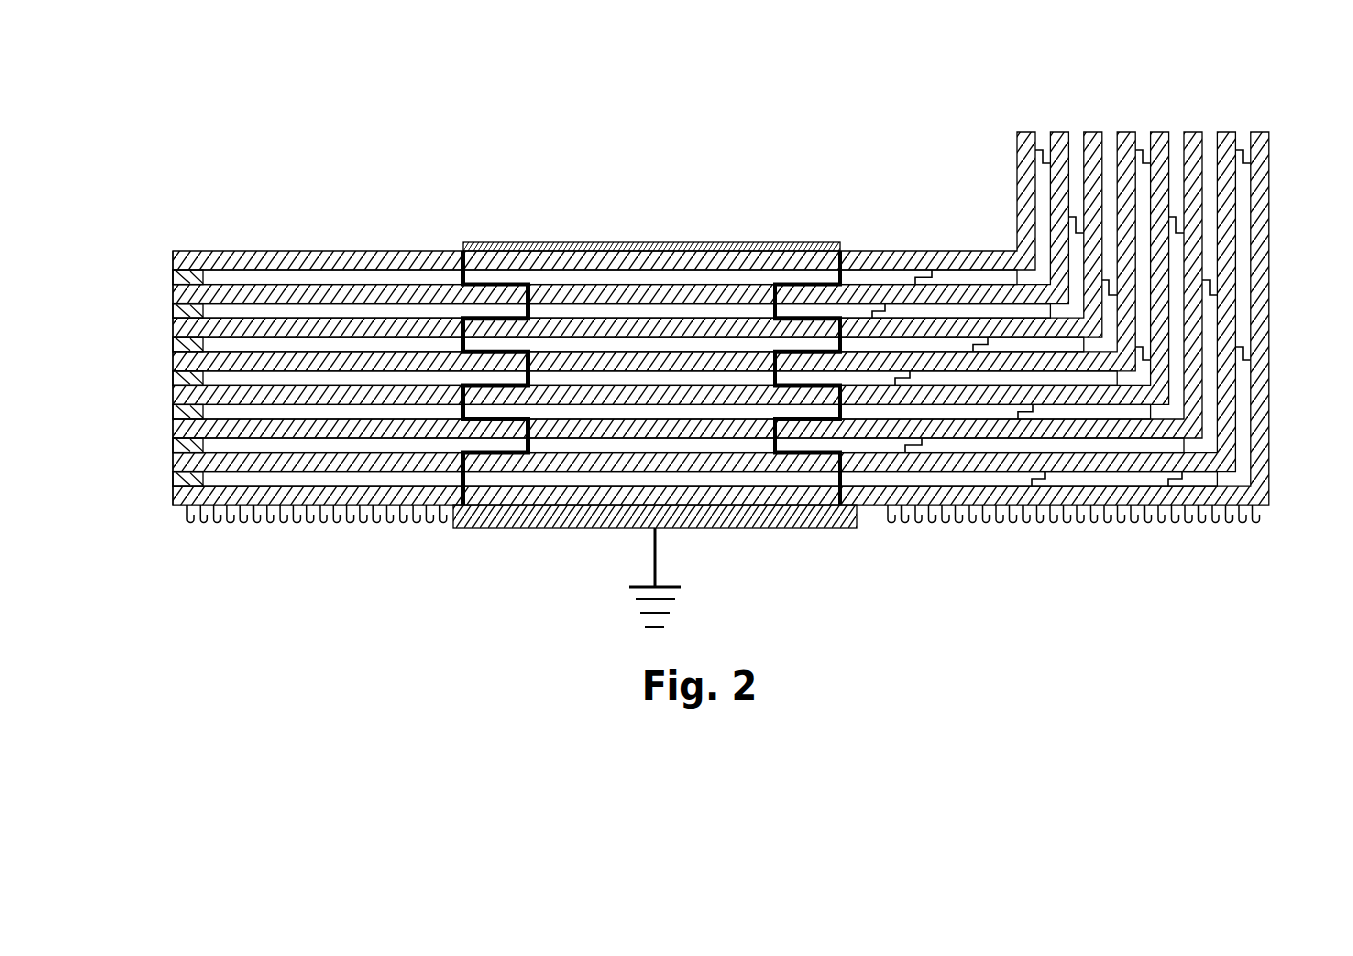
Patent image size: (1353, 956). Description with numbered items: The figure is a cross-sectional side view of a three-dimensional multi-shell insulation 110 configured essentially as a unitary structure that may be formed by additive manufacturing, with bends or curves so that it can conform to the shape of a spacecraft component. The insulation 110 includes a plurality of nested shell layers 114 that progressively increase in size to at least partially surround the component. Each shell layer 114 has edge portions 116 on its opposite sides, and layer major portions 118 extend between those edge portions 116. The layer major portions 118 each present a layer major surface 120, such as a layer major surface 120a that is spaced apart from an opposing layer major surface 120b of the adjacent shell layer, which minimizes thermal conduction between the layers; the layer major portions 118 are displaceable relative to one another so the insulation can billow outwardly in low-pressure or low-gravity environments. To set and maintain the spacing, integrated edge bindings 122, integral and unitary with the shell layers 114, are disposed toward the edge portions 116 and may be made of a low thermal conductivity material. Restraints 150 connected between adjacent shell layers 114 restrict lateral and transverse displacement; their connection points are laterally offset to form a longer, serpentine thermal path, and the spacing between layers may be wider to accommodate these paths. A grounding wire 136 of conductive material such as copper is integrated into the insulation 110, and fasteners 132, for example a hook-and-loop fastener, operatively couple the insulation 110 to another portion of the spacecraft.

The three-dimensional multi-shell insulation 110 is at (243, 168).
The nested shell layers 114 is at (1092, 132).
The edge portions 116 is at (238, 395).
The layer major portions 118 is at (365, 378).
The layer major surface 120 is at (1147, 415).
The layer major surface 120a is at (392, 418).
The opposing layer major surface 120b is at (418, 420).
The integrated edge bindings 122 is at (185, 345).
The fastener 132 is at (305, 525).
The grounding wire 136 is at (652, 558).
The restraints 150 is at (978, 345).